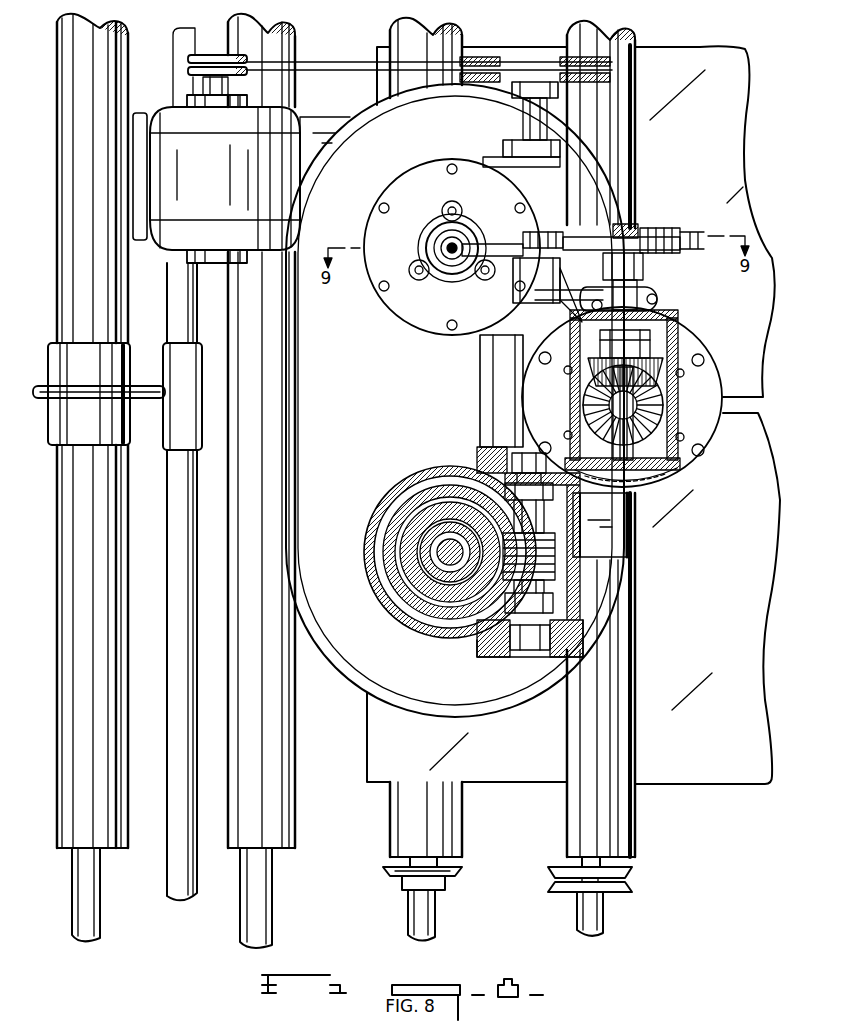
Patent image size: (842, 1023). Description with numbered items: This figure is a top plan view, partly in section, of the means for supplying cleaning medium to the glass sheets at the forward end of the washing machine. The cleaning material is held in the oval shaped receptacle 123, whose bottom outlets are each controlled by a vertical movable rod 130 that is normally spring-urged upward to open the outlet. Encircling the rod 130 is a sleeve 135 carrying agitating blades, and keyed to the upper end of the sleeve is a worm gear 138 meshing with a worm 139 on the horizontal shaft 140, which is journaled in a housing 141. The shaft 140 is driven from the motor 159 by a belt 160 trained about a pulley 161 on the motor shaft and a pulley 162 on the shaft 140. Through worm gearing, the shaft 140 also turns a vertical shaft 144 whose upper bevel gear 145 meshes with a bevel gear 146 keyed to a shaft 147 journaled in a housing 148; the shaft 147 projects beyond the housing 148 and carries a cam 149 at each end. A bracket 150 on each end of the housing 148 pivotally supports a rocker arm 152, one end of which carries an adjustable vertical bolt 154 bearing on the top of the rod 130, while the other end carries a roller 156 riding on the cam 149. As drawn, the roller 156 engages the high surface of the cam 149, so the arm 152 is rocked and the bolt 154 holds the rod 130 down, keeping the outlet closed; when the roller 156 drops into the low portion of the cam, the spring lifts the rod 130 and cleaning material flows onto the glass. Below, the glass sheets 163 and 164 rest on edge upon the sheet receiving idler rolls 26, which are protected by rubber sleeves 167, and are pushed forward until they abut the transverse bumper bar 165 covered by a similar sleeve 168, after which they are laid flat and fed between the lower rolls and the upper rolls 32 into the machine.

The sheet receiving idler rolls 26 is at (232, 821).
The upper roll 32 is at (607, 667).
The receptacle 123 is at (356, 683).
The vertical movable rod 130 is at (424, 622).
The sleeve 135 is at (392, 582).
The worm gear 138 is at (390, 548).
The worm 139 is at (620, 550).
The horizontal shaft 140 is at (532, 118).
The housing 141 is at (500, 360).
The vertical shaft 144 is at (590, 400).
The bevel gear 145 is at (665, 405).
The bevel gear 146 is at (652, 360).
The shaft 147 is at (672, 492).
The housing 148 is at (676, 318).
The cam 149 is at (650, 230).
The bracket 150 is at (537, 310).
The rocker arm 152 is at (498, 245).
The vertical bolt 154 is at (455, 262).
The roller 156 is at (628, 228).
The motor 159 is at (153, 142).
The belt 160 is at (357, 62).
The pulley 161 is at (213, 56).
The pulley 162 is at (530, 58).
The glass sheet 163 is at (754, 222).
The glass sheet 164 is at (78, 398).
The bumper bar 165 is at (176, 490).
The rubber sleeve 167 is at (128, 453).
The sleeve 168 is at (180, 353).